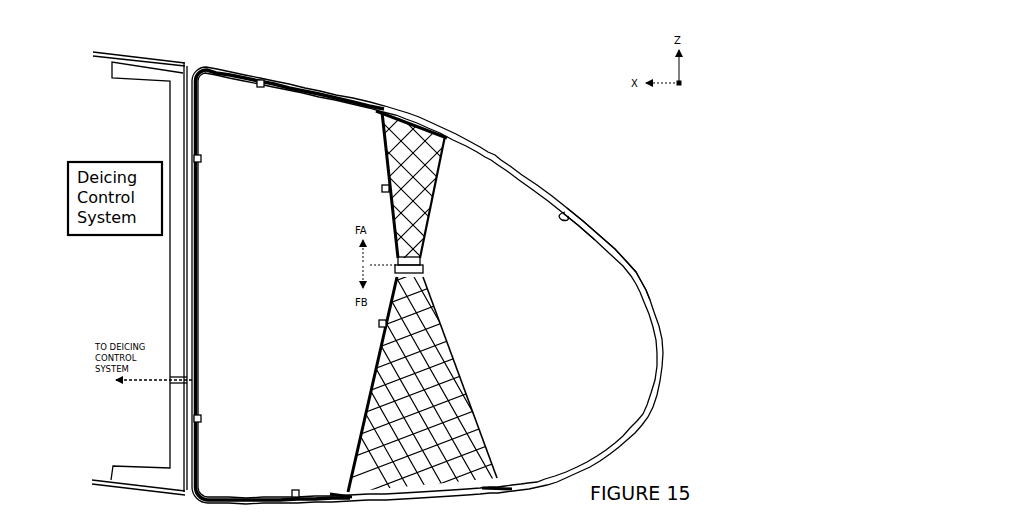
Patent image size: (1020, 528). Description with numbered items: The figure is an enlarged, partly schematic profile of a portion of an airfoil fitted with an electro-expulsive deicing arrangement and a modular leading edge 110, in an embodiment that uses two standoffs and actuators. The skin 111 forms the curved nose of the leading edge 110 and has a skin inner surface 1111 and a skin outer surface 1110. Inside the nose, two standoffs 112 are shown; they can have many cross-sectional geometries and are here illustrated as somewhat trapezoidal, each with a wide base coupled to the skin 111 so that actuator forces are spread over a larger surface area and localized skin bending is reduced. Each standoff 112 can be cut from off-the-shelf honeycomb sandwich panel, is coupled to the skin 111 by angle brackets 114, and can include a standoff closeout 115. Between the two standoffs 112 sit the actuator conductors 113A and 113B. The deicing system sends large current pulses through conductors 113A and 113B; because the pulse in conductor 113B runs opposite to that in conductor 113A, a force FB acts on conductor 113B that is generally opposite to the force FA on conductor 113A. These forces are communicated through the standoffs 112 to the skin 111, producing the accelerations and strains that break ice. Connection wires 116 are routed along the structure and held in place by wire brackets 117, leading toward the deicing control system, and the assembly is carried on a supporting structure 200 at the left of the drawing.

The modular leading edge 110 is at (572, 167).
The skin 111 is at (630, 266).
The skin outer surface 1110 is at (607, 234).
The skin inner surface 1111 is at (570, 210).
The standoff 112 is at (418, 194).
The conductor 113A is at (408, 259).
The conductor 113B is at (423, 269).
The angle bracket 114 is at (378, 112).
The standoff closeout 115 is at (425, 233).
The connection wires 116 is at (312, 93).
The wire bracket 117 is at (382, 190).
The support frame 200 is at (175, 56).